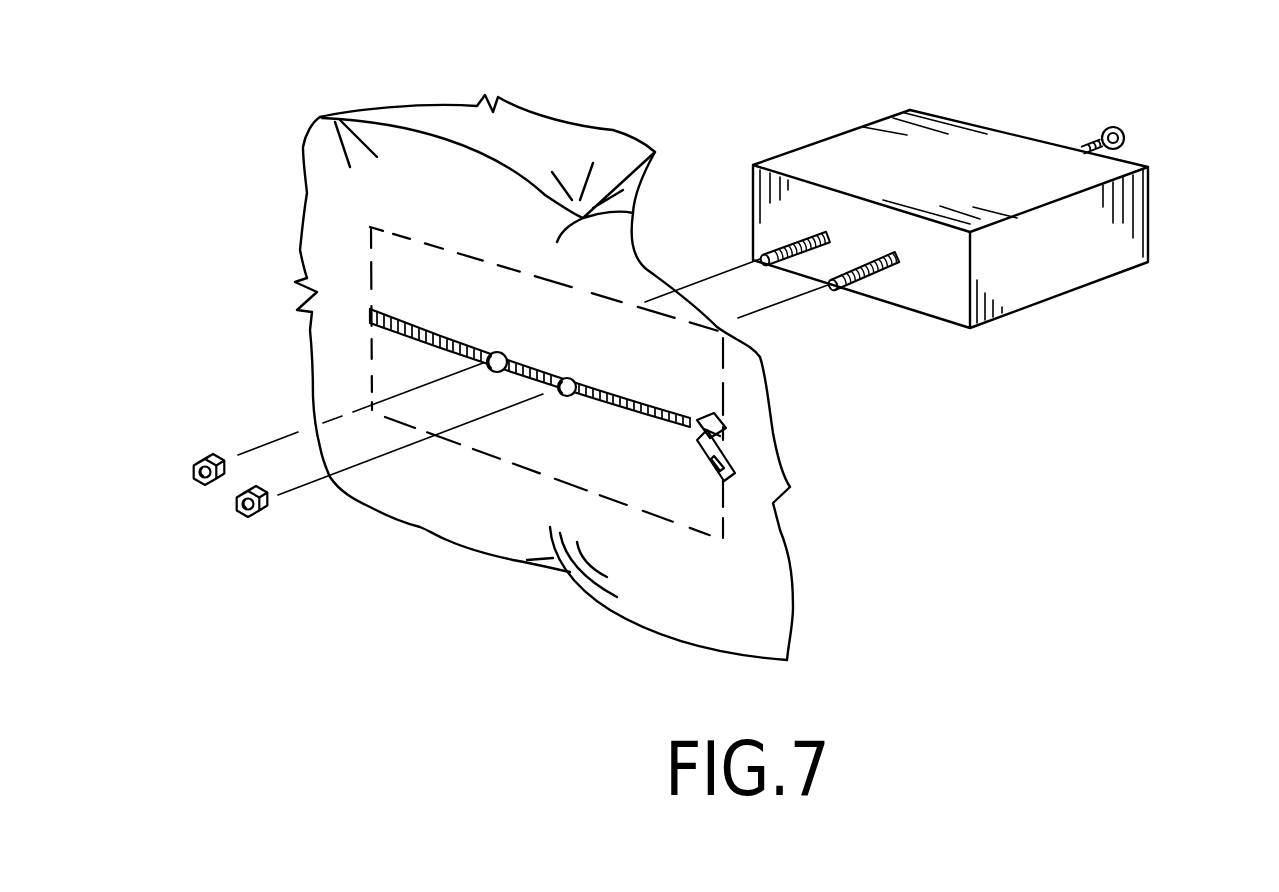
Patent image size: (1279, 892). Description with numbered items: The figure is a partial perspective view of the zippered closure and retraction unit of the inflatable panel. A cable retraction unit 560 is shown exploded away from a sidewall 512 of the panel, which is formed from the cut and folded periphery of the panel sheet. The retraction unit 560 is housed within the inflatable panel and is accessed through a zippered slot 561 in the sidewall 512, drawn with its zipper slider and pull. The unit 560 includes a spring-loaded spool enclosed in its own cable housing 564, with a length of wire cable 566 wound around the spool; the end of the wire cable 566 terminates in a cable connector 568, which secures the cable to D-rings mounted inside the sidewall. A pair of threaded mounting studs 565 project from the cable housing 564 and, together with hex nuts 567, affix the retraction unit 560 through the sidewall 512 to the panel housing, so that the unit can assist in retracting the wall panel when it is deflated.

The panel end wall 512 is at (350, 167).
The cable retraction unit 560 is at (978, 94).
The zippered slot 561 is at (420, 327).
The cable housing 564 is at (863, 157).
The threaded mounting stud 565 is at (868, 278).
The wire cable 566 is at (1085, 143).
The hex nut 567 is at (196, 455).
The cable connector 568 is at (1125, 134).